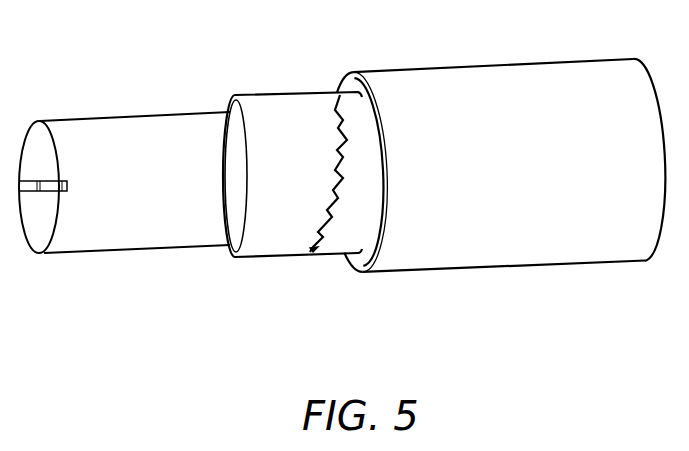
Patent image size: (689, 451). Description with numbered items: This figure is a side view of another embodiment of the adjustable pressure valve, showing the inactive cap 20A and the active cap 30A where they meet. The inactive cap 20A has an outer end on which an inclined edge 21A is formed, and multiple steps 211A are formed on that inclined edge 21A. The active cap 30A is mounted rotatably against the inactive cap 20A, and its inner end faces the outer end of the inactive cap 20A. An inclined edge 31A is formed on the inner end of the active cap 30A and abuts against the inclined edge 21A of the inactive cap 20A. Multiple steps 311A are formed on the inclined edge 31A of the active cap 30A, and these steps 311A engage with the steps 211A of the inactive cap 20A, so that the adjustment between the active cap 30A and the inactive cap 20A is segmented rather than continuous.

The inactive cap 20A is at (487, 165).
The inclined edge 21A is at (410, 135).
The steps 211A is at (343, 157).
The active cap 30A is at (290, 175).
The inclined edge 31A is at (282, 134).
The steps 311A is at (335, 156).